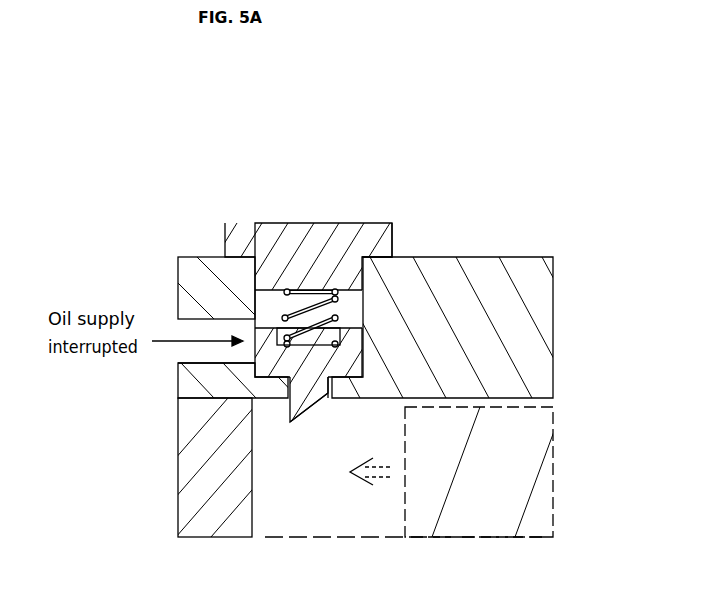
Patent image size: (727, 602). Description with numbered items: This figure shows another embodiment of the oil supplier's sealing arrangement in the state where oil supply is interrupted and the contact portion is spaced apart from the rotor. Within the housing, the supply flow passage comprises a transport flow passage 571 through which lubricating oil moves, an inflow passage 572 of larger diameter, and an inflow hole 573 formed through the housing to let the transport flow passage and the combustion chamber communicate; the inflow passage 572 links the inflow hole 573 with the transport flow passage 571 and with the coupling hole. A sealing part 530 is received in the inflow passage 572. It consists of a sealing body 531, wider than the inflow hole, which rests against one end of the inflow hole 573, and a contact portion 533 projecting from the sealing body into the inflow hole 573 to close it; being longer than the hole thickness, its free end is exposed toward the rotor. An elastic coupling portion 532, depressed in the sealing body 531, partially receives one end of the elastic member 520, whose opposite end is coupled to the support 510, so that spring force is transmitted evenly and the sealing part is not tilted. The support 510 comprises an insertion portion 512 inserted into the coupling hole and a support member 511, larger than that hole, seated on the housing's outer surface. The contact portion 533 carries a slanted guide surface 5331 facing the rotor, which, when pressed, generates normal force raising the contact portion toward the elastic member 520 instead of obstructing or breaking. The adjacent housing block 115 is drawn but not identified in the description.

The housing block 115 is at (255, 300).
The support 510 is at (289, 258).
The support member 511 is at (312, 232).
The insertion portion 512 is at (252, 272).
The elastic member 520 is at (333, 290).
The sealing part 530 is at (475, 438).
The sealing body 531 is at (345, 352).
The elastic coupling portion 532 is at (337, 343).
The contact portion 533 is at (332, 386).
The guide surface 5331 is at (317, 405).
The transport flow passage 571 is at (190, 352).
The inflow passage 572 is at (260, 368).
The inflow hole 573 is at (252, 398).